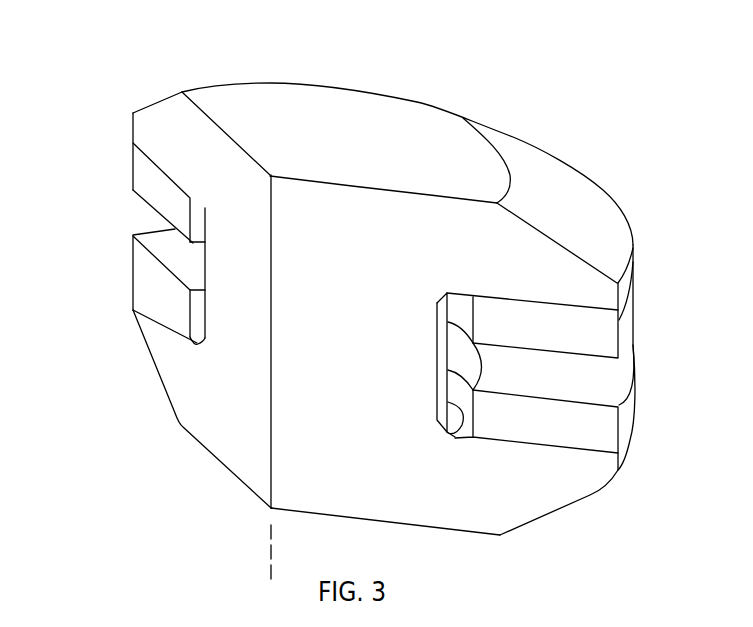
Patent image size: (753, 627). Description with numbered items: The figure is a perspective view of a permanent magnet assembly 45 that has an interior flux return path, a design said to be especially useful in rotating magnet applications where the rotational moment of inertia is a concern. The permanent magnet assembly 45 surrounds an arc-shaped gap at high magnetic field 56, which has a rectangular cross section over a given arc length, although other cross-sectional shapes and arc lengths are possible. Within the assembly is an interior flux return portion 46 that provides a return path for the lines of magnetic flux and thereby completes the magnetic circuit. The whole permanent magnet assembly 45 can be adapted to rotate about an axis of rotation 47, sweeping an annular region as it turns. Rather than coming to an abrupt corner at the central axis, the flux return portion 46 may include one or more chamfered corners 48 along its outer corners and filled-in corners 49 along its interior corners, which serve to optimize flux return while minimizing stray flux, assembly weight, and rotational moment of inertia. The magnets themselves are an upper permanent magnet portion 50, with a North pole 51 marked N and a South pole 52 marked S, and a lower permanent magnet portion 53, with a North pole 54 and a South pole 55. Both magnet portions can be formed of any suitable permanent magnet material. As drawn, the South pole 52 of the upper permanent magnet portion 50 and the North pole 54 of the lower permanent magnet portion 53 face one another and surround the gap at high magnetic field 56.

The permanent magnet assembly 45 is at (572, 70).
The interior flux return portion 46 is at (238, 415).
The axis of rotation 47 is at (270, 572).
The chamfered corners 48 is at (152, 102).
The filled-in corners 49 is at (201, 207).
The upper permanent magnet portion 50 is at (140, 177).
The North pole 51 is at (152, 175).
The South pole 52 is at (153, 207).
The lower permanent magnet portion 53 is at (148, 279).
The North pole 54 is at (158, 272).
The South pole 55 is at (163, 303).
The gap at high magnetic field 56 is at (150, 228).